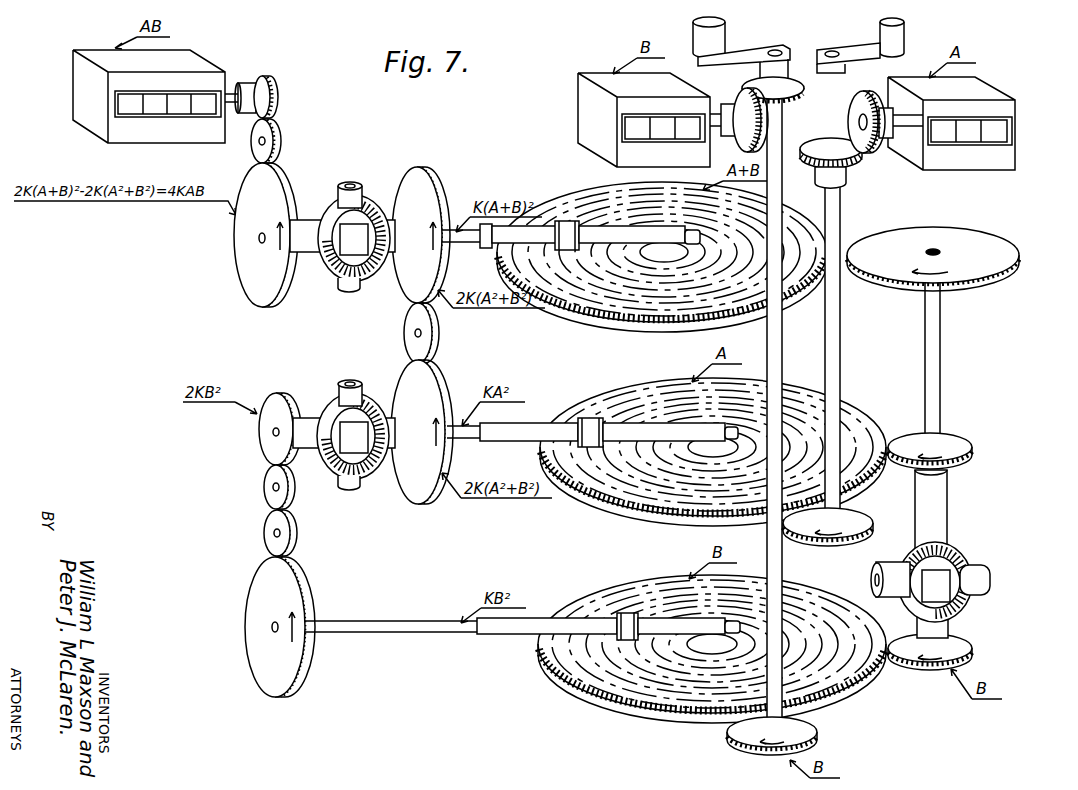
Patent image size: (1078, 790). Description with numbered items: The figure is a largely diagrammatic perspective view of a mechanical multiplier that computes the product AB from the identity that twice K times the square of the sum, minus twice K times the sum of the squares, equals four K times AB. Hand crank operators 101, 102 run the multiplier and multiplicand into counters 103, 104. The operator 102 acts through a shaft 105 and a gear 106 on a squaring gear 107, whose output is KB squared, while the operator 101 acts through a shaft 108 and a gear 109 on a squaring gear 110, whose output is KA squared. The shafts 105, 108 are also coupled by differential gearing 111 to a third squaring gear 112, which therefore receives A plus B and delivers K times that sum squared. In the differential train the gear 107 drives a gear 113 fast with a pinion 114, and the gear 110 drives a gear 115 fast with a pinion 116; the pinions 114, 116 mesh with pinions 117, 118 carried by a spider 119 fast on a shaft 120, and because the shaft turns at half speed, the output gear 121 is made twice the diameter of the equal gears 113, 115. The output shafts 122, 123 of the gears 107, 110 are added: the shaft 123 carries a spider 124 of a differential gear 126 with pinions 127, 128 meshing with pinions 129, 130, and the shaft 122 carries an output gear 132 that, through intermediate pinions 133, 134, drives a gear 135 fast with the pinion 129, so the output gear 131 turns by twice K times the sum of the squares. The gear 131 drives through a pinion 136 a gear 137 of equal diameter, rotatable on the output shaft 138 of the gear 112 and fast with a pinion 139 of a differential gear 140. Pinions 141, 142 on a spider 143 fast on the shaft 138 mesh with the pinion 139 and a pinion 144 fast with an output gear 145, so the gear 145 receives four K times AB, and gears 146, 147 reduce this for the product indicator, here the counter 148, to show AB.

The operator 101 is at (862, 53).
The operator 102 is at (745, 53).
The counter 103 is at (1017, 141).
The counter 104 is at (586, 127).
The shaft 105 is at (784, 380).
The gear 106 is at (812, 728).
The squaring gear 107 is at (826, 603).
The shaft 108 is at (842, 313).
The gear 109 is at (862, 518).
The squaring gear 110 is at (860, 422).
The differential gearing 111 is at (988, 544).
The squaring gear 112 is at (592, 201).
The gear 113 is at (974, 647).
The pinion 114 is at (962, 614).
The gear 115 is at (958, 441).
The pinion 116 is at (950, 549).
The pinion 117 is at (902, 560).
The pinion 118 is at (984, 574).
The spider 119 is at (936, 586).
The shaft 120 is at (941, 380).
The output gear 121 is at (905, 228).
The output shaft 122 is at (400, 634).
The output shaft 123 is at (466, 445).
The spider 124 is at (354, 437).
The differential gear 126 is at (349, 372).
The pinion 127 is at (368, 396).
The pinion 128 is at (331, 470).
The pinion 129 is at (316, 410).
The pinion 130 is at (392, 420).
The output gear 131 is at (400, 479).
The output gear 132 is at (248, 613).
The intermediate pinion 133 is at (263, 539).
The intermediate pinion 134 is at (263, 488).
The gear 135 is at (258, 434).
The pinion 136 is at (404, 335).
The gear 137 is at (411, 170).
The output shaft 138 is at (478, 248).
The pinion 139 is at (390, 276).
The differential gear 140 is at (353, 175).
The pinion 141 is at (372, 200).
The pinion 142 is at (331, 282).
The spider 143 is at (354, 239).
The pinion 144 is at (316, 216).
The output gear 145 is at (237, 256).
The gear 146 is at (253, 146).
The gear 147 is at (258, 80).
The counter AB 148 is at (92, 124).